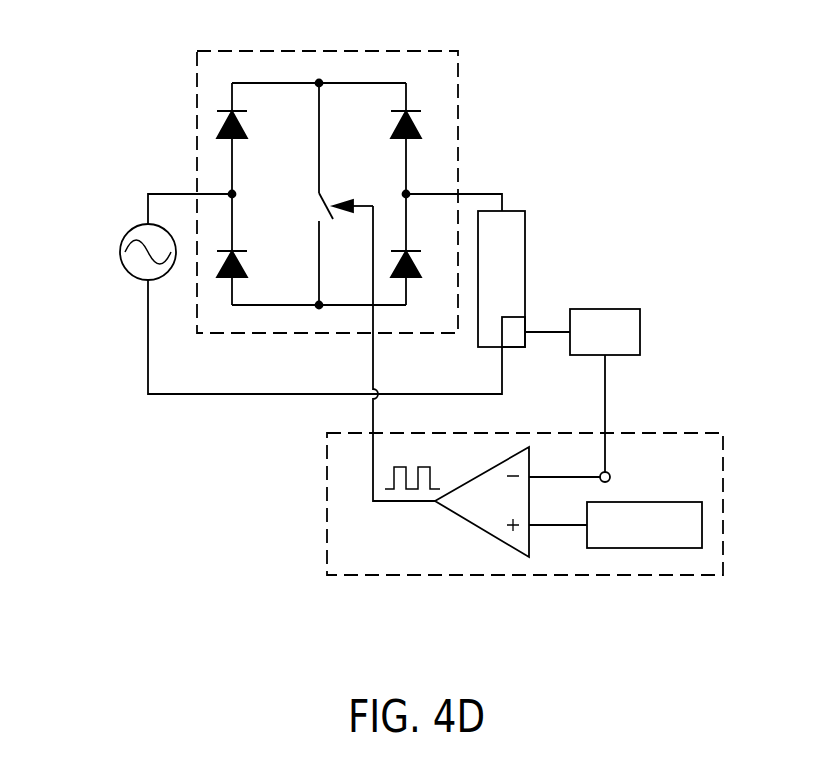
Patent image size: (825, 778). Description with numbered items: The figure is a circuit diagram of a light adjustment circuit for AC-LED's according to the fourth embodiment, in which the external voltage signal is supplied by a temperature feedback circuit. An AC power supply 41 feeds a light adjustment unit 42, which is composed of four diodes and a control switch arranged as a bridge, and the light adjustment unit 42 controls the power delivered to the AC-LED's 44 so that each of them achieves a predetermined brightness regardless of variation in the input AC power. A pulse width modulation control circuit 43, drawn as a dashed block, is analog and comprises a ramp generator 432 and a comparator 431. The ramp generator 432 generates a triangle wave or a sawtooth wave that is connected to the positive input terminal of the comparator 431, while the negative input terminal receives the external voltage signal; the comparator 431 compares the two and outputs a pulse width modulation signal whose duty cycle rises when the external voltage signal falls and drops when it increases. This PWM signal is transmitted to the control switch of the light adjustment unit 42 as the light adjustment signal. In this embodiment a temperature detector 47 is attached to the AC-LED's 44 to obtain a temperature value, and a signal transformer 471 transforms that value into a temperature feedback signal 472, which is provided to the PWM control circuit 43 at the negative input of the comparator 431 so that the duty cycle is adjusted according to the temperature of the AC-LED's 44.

The AC power supply 41 is at (128, 232).
The light adjustment unit 42 is at (458, 73).
The pulse width modulation control circuit 43 is at (555, 489).
The AC-LED's 44 is at (512, 215).
The temperature detector 47 is at (513, 347).
The signal transformer 471 is at (640, 332).
The temperature feedback signal 472 is at (608, 472).
The comparator 431 is at (513, 452).
The ramp generator 432 is at (702, 525).